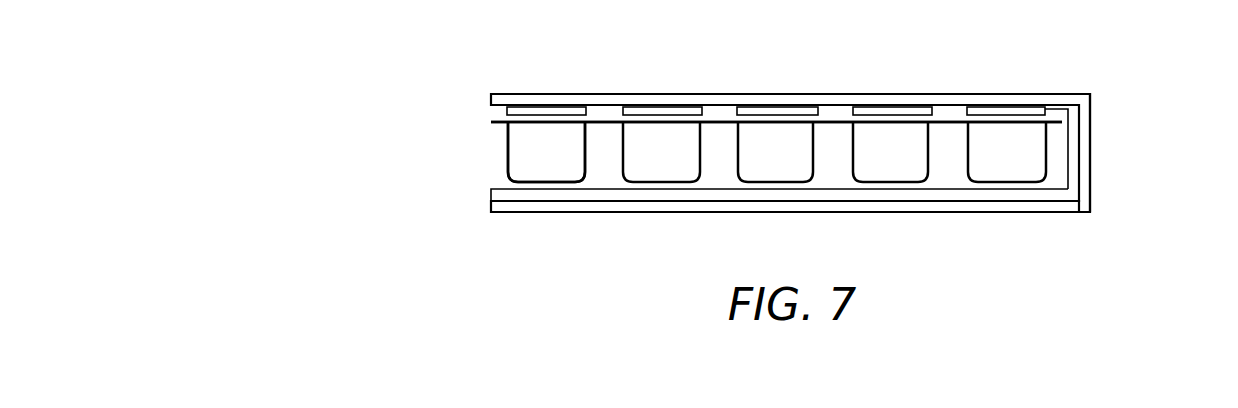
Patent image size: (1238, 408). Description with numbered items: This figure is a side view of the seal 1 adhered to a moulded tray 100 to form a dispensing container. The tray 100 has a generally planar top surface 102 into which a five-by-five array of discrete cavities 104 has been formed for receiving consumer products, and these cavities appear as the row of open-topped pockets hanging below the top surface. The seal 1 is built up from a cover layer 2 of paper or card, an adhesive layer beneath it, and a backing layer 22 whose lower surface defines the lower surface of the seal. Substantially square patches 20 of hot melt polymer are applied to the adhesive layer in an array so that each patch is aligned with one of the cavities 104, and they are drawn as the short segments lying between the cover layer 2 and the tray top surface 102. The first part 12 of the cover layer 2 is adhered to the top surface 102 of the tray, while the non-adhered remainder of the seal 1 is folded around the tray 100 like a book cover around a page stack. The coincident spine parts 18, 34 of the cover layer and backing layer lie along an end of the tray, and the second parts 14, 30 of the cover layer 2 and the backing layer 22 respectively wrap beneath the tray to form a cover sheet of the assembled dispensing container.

The seal 1 is at (1099, 70).
The cover layer 2 is at (603, 101).
The first part of the cover layer 12 is at (889, 104).
The second part of the cover layer 14 is at (1007, 206).
The spine part of the cover layer 18 is at (1083, 175).
The patches 20 is at (546, 110).
The backing layer 22 is at (716, 185).
The second part of the backing layer 30 is at (892, 195).
The spine part of the backing layer 34 is at (1073, 140).
The moulded tray 100 is at (490, 165).
The top surface of the tray 102 is at (720, 121).
The cavities 104 is at (550, 170).